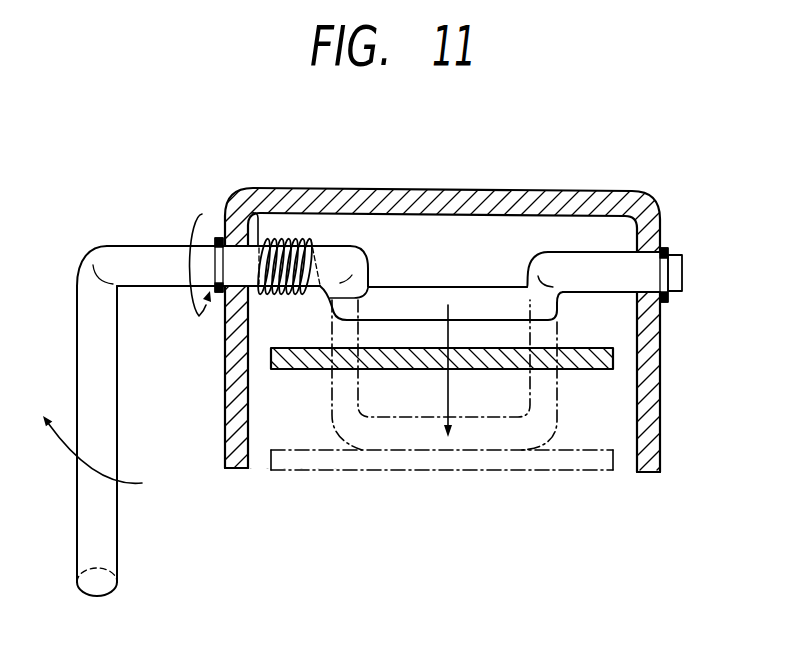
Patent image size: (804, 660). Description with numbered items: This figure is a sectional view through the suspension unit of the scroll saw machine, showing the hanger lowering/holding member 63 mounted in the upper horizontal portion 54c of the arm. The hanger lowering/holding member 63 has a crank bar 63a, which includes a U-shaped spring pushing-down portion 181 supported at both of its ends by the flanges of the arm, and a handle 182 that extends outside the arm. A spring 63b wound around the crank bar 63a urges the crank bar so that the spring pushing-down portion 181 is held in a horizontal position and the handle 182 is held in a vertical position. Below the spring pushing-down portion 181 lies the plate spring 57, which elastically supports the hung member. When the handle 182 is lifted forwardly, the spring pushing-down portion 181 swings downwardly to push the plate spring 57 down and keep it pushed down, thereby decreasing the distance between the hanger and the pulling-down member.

The upper horizontal portion 54c is at (456, 192).
The hanger lowering/holding member 63 is at (173, 212).
The crank bar 63a is at (611, 245).
The spring 63b is at (282, 238).
The spring pushing-down portion 181 is at (503, 300).
The handle 182 is at (118, 405).
The plate spring 57 is at (588, 370).